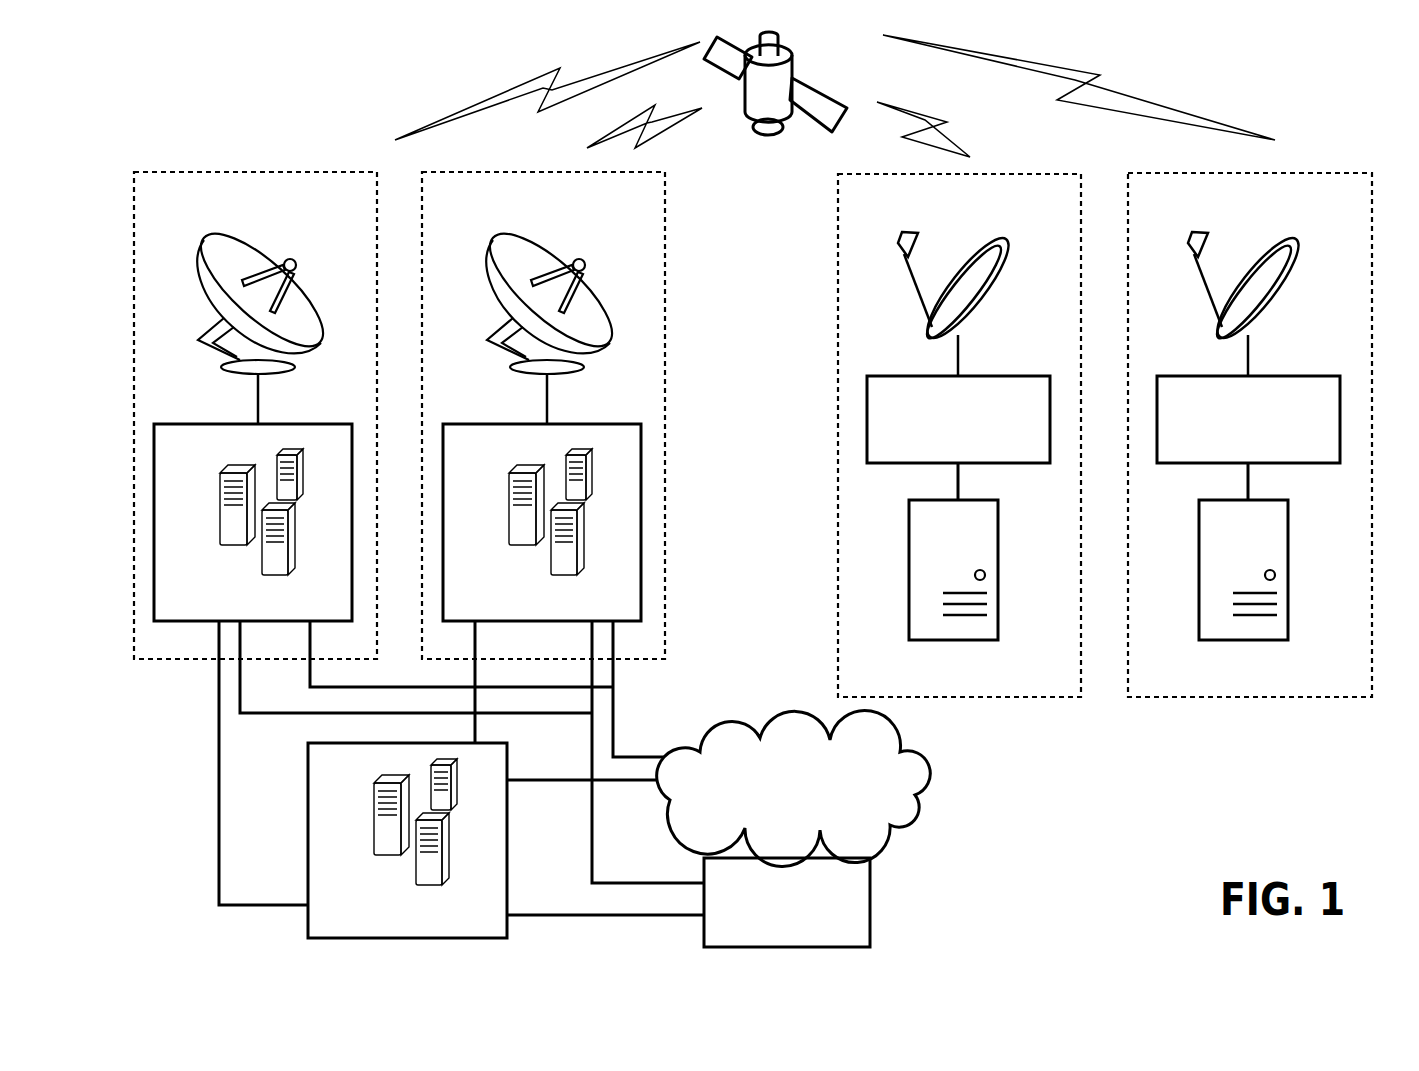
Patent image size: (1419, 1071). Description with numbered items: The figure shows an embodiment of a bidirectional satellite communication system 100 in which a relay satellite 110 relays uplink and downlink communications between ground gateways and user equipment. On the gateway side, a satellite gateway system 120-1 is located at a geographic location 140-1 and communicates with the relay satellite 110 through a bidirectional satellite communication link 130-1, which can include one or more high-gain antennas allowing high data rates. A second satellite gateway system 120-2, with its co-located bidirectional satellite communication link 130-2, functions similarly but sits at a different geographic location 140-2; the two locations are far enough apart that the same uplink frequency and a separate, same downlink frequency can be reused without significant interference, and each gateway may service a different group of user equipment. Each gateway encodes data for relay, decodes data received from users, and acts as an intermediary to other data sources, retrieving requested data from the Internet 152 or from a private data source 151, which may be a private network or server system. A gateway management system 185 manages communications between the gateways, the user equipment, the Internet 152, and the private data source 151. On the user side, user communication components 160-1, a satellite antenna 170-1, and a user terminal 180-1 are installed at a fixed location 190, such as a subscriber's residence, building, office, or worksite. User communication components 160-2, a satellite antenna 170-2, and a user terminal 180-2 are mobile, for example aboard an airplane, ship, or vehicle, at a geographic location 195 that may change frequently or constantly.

The bidirectional satellite communication system 100 is at (162, 85).
The relay satellite 110 is at (838, 92).
The satellite gateway system 120-1 is at (318, 424).
The satellite gateway system 120-2 is at (547, 491).
The bidirectional satellite communication link 130-1 is at (268, 262).
The bidirectional satellite communication link 130-2 is at (550, 312).
The geographic location 140-1 is at (330, 172).
The geographic location 140-2 is at (665, 248).
The private data source 151 is at (872, 878).
The Internet 152 is at (789, 730).
The user communication components 160-1 is at (1025, 376).
The user communication components 160-2 is at (1257, 388).
The satellite antenna 170-1 is at (1008, 240).
The satellite antenna 170-2 is at (1265, 280).
The user terminal 180-1 is at (998, 555).
The user terminal 180-2 is at (1275, 565).
The gateway management system 185 is at (507, 860).
The fixed location 190 is at (838, 280).
The geographic location 195 is at (1374, 186).